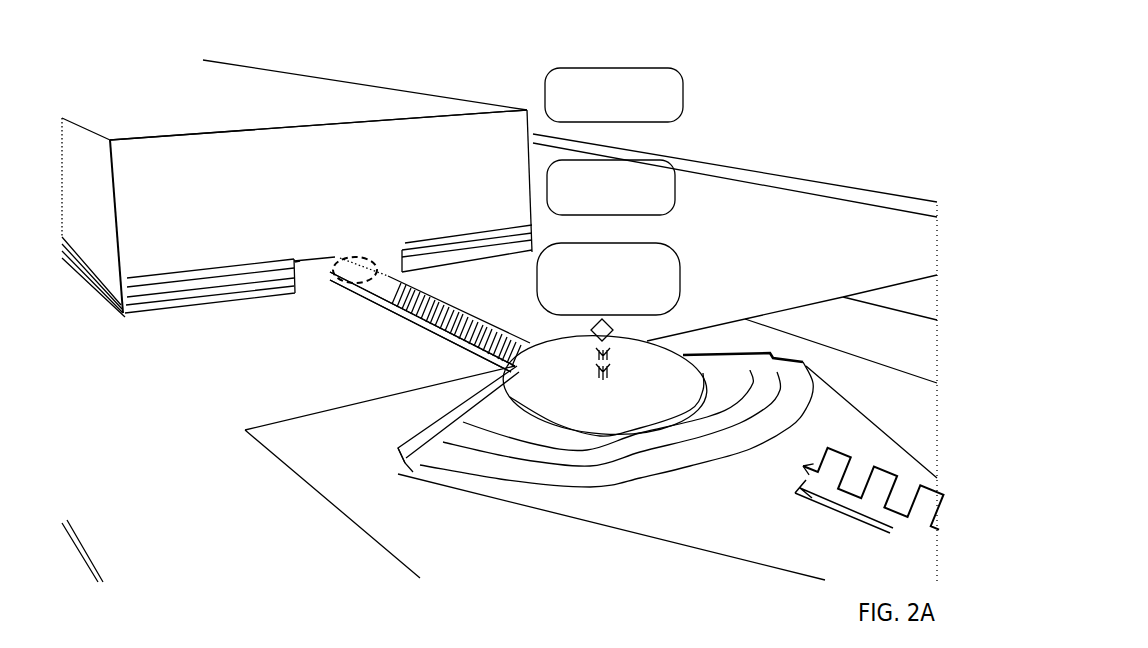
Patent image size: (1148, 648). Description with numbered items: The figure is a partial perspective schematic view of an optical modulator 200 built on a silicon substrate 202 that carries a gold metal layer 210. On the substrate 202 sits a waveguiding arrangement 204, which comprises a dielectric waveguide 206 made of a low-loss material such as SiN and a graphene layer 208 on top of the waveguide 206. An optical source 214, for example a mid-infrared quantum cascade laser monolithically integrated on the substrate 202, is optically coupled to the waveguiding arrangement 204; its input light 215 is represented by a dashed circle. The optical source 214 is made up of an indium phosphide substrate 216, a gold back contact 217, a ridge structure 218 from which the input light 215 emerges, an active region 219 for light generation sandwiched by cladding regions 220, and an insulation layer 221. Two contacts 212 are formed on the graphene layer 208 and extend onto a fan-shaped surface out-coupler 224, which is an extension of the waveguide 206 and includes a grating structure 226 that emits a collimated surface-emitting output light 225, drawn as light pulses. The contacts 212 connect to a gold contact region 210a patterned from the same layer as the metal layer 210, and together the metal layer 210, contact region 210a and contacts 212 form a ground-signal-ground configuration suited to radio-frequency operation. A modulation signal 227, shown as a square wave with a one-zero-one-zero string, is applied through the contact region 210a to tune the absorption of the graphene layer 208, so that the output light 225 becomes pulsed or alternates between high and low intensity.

The optical modulator 200 is at (830, 88).
The substrate 202 is at (544, 438).
The waveguiding arrangement 204 is at (353, 310).
The dielectric waveguide 206 is at (410, 330).
The graphene layer 208 is at (467, 292).
The metal layer 210 is at (566, 438).
The contact region 210a is at (761, 532).
The contacts 212 is at (562, 360).
The optical source 214 is at (455, 84).
The input light 215 is at (352, 258).
The substrate of optical source 216 is at (477, 185).
The back contact 217 is at (202, 102).
The ridge structure 218 is at (320, 273).
The active region 219 is at (185, 285).
The cladding regions 220 is at (258, 270).
The insulation layer 221 is at (163, 313).
The surface out-coupler 224 is at (819, 280).
The output light 225 is at (672, 83).
The grating structure 226 is at (463, 453).
The modulation signal 227 is at (910, 522).